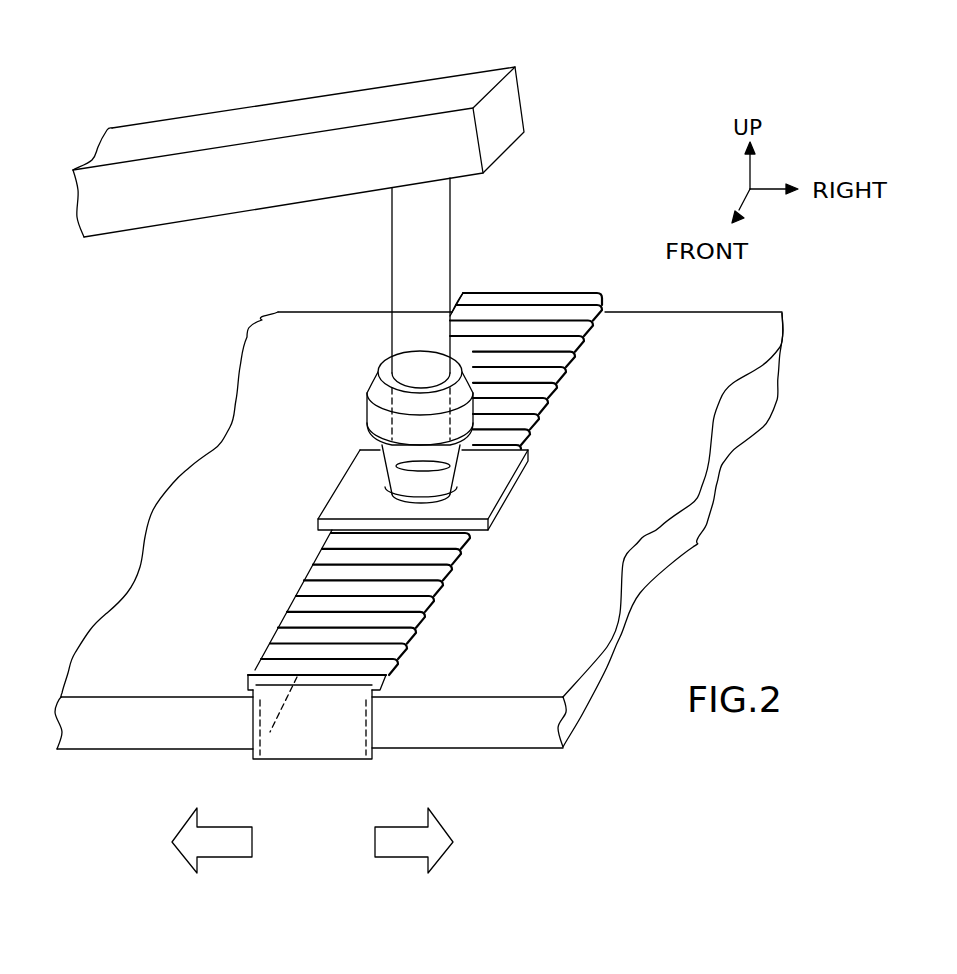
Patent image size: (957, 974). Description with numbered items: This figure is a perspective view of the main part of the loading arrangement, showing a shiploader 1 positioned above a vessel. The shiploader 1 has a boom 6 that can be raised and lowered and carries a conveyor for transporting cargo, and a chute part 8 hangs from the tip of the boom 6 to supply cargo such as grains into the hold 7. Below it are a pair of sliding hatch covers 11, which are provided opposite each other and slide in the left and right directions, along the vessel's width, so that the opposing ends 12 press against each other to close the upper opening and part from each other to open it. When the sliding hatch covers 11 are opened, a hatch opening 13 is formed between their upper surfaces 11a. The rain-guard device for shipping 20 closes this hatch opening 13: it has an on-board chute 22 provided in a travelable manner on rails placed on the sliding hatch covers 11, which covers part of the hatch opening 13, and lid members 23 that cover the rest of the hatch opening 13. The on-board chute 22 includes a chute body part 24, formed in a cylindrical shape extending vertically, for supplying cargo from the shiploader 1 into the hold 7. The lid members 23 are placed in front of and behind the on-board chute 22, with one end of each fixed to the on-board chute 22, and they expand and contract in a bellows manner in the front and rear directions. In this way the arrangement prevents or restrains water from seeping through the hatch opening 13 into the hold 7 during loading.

The shiploader 1 is at (298, 205).
The boom 6 is at (312, 107).
The hold 7 is at (392, 807).
The chute part 8 is at (443, 198).
The sliding hatch cover 11 is at (418, 530).
The upper surface 11a is at (152, 598).
The opposing end 12 is at (260, 732).
The hatch opening 13 is at (308, 770).
The rain-guard device for shipping 20 is at (447, 441).
The on-board chute 22 is at (534, 494).
The lid member 23 is at (570, 400).
The chute body part 24 is at (380, 465).